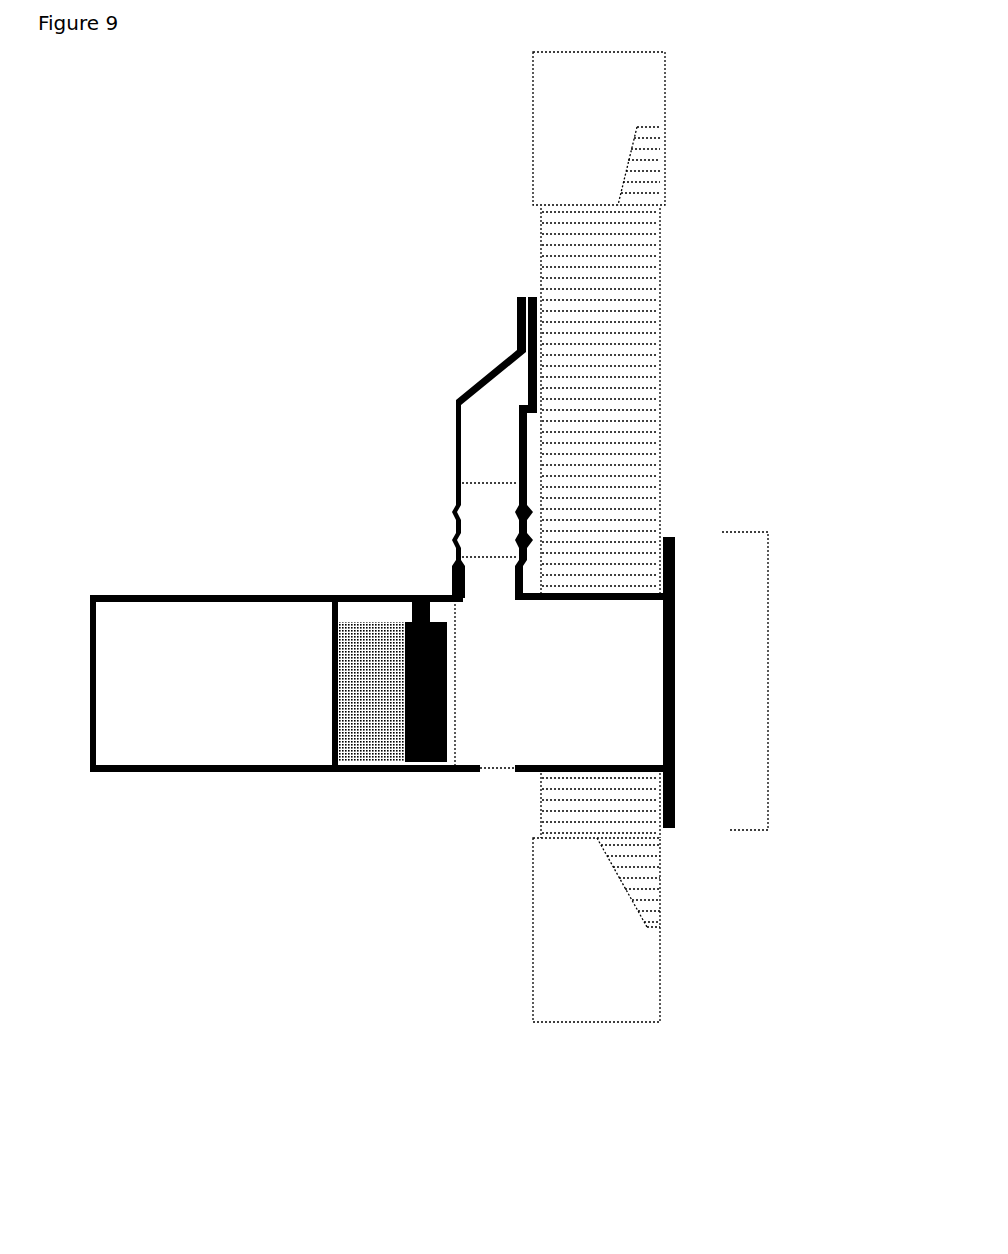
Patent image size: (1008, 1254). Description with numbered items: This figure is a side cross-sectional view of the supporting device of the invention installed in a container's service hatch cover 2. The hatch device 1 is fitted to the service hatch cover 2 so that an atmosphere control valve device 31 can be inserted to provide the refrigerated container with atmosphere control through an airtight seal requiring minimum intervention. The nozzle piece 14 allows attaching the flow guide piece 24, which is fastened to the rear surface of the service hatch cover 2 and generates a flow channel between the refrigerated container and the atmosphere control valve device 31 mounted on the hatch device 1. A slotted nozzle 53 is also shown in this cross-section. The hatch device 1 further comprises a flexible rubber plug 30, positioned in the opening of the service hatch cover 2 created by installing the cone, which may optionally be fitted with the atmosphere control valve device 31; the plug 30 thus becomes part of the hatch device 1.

The hatch device 1 is at (768, 628).
The service hatch cover 2 is at (618, 328).
The nozzle piece 14 is at (460, 588).
The flow guide piece 24 is at (472, 443).
The plug 30 is at (368, 762).
The atmosphere control valve device 31 is at (193, 750).
The slotted nozzle 53 is at (490, 750).